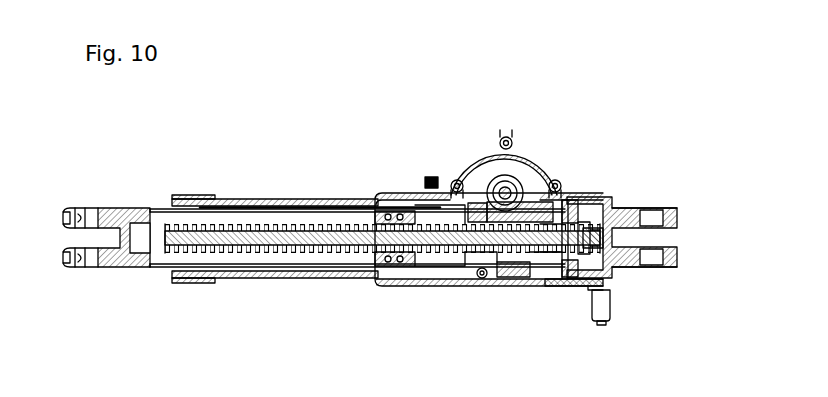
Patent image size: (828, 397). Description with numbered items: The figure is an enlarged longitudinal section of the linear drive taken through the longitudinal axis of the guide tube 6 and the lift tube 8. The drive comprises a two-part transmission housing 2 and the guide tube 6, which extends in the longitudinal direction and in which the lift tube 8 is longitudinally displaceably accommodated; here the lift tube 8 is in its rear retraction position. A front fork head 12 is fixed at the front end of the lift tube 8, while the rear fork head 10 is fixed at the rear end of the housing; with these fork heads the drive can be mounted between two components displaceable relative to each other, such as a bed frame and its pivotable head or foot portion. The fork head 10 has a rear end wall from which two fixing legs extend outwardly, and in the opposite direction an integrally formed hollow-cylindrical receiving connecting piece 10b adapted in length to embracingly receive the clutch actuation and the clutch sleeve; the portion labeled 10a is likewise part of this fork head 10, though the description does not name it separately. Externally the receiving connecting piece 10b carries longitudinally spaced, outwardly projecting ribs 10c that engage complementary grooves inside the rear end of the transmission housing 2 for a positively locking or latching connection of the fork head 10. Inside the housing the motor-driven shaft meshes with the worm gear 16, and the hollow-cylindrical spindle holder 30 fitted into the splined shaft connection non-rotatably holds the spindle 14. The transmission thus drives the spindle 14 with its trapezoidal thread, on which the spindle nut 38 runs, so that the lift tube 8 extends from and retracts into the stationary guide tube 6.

The transmission housing 2 is at (443, 285).
The guide tube 6 is at (253, 279).
The lift tube 8 is at (154, 268).
The rear fork head 10 is at (610, 215).
The end cap bore 10a is at (598, 239).
The receiving connecting piece 10b is at (589, 283).
The ribs 10c is at (575, 282).
The front fork head 12 is at (113, 212).
The spindle 14 is at (210, 238).
The worm gear 16 is at (500, 268).
The spindle holder 30 is at (520, 254).
The spindle nut 38 is at (403, 258).